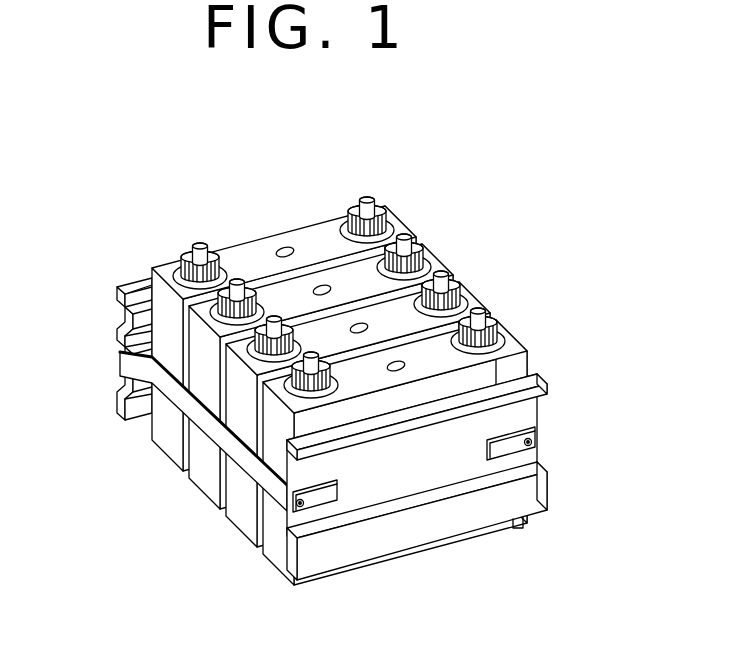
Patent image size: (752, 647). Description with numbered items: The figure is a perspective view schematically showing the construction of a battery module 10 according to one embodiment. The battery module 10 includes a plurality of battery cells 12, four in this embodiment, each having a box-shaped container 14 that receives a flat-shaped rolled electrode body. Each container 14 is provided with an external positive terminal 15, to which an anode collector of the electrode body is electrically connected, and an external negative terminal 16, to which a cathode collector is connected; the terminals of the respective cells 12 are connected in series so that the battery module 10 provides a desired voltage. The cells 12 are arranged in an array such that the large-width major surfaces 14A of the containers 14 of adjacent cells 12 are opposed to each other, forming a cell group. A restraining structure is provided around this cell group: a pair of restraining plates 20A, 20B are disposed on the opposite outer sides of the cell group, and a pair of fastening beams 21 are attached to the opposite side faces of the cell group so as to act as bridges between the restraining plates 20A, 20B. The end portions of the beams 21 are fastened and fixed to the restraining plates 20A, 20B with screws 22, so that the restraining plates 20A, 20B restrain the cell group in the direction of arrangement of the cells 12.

The battery module 10 is at (600, 134).
The battery cell 12 is at (345, 395).
The container 14 is at (401, 395).
The major surface 14A is at (513, 363).
The external positive terminal 15 is at (391, 252).
The external negative terminal 16 is at (237, 281).
The restraining plate 20A is at (452, 499).
The restraining plate 20B is at (128, 285).
The fastening beam 21 is at (252, 472).
The screw 22 is at (533, 442).